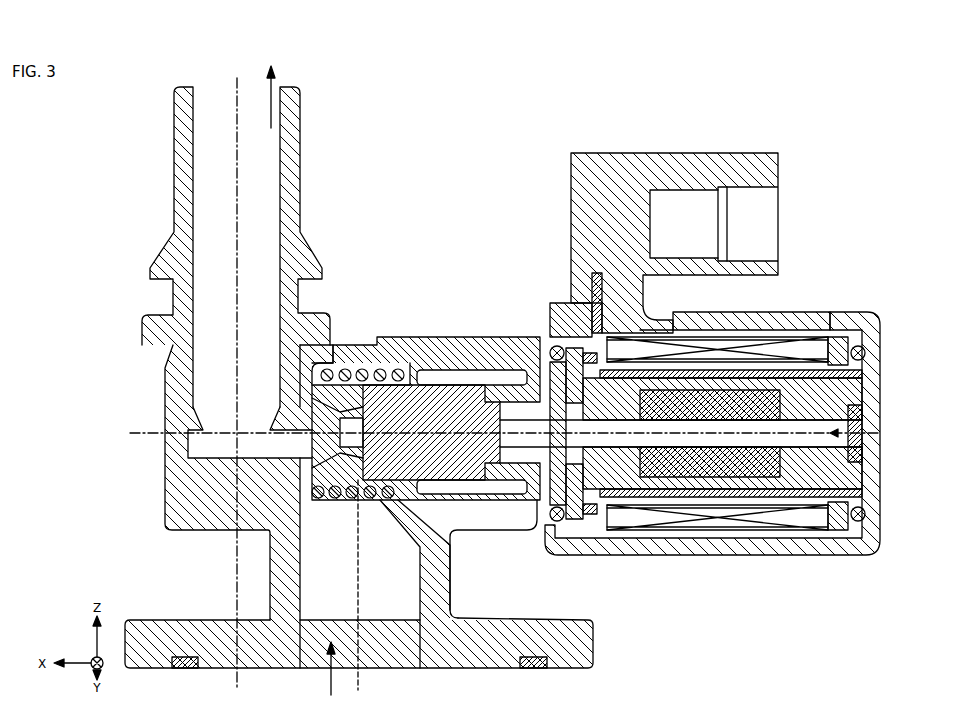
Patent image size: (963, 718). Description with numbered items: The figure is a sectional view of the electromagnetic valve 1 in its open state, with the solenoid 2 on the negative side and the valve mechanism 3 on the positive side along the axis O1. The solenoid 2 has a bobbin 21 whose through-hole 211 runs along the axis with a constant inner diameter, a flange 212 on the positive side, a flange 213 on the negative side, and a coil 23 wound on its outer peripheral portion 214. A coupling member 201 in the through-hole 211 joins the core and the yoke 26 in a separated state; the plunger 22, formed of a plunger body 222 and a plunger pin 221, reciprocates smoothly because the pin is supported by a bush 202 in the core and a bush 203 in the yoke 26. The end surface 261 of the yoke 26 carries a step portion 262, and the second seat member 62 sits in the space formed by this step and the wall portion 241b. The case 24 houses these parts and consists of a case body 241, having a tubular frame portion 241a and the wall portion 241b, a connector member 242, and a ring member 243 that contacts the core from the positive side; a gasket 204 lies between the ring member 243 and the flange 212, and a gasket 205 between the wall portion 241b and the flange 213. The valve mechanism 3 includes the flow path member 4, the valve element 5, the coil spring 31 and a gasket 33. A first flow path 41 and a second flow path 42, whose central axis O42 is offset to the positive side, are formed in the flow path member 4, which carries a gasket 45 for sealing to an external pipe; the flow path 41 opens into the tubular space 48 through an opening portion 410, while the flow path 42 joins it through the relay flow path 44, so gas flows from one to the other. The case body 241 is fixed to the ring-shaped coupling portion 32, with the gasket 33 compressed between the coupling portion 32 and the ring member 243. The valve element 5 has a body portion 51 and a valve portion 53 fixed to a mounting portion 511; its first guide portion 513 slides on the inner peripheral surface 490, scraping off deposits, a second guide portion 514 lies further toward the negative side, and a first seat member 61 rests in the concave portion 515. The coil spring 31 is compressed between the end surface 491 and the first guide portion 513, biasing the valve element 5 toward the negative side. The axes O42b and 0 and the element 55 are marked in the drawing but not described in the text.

The electromagnetic valve 1 is at (786, 131).
The solenoid 2 is at (714, 375).
The valve mechanism 3 is at (137, 256).
The flow path member 4 is at (150, 378).
The valve element 5 is at (328, 374).
The bobbin 21 is at (830, 333).
The plunger 22 is at (773, 335).
The coil 23 is at (706, 330).
The case 24 is at (882, 312).
The yoke 26 is at (750, 520).
The coil spring 31 is at (345, 484).
The coupling portion 32 is at (535, 340).
The gasket 33 is at (563, 523).
The first flow path 41 is at (272, 618).
The second flow path 42 is at (213, 213).
The relay flow path 44 is at (333, 347).
The gasket 45 is at (543, 670).
The tubular space 48 is at (519, 559).
The body portion 51 is at (421, 338).
The valve portion 53 is at (388, 338).
The spacer 55 is at (612, 546).
The first seat member 61 is at (495, 390).
The second seat member 62 is at (866, 421).
The coupling member 201 is at (660, 540).
The bush 202 is at (640, 522).
The bush 203 is at (790, 540).
The gasket 204 is at (590, 518).
The gasket 205 is at (867, 353).
The through-hole 211 is at (808, 335).
The flange 212 is at (652, 318).
The flange 213 is at (886, 326).
The outer peripheral portion 214 is at (741, 332).
The plunger pin 221 is at (684, 535).
The plunger body 222 is at (700, 546).
The case body 241 is at (861, 592).
The frame portion 241a is at (830, 550).
The wall portion 241b is at (884, 580).
The connector member 242 is at (675, 172).
The ring member 243 is at (562, 320).
The end surface 261 is at (866, 396).
The step portion 262 is at (866, 463).
The opening portion 410 is at (260, 536).
The inner peripheral surface 490 is at (486, 400).
The end surface 491 is at (341, 345).
The mounting portion 511 is at (336, 436).
The first guide portion 513 is at (413, 508).
The second guide portion 514 is at (528, 534).
The concave portion 515 is at (482, 403).
The flow direction 0 is at (275, 96).
The axis O1 is at (143, 431).
The central axis of second flow path O42 is at (236, 149).
The axis of passage O42b is at (357, 563).